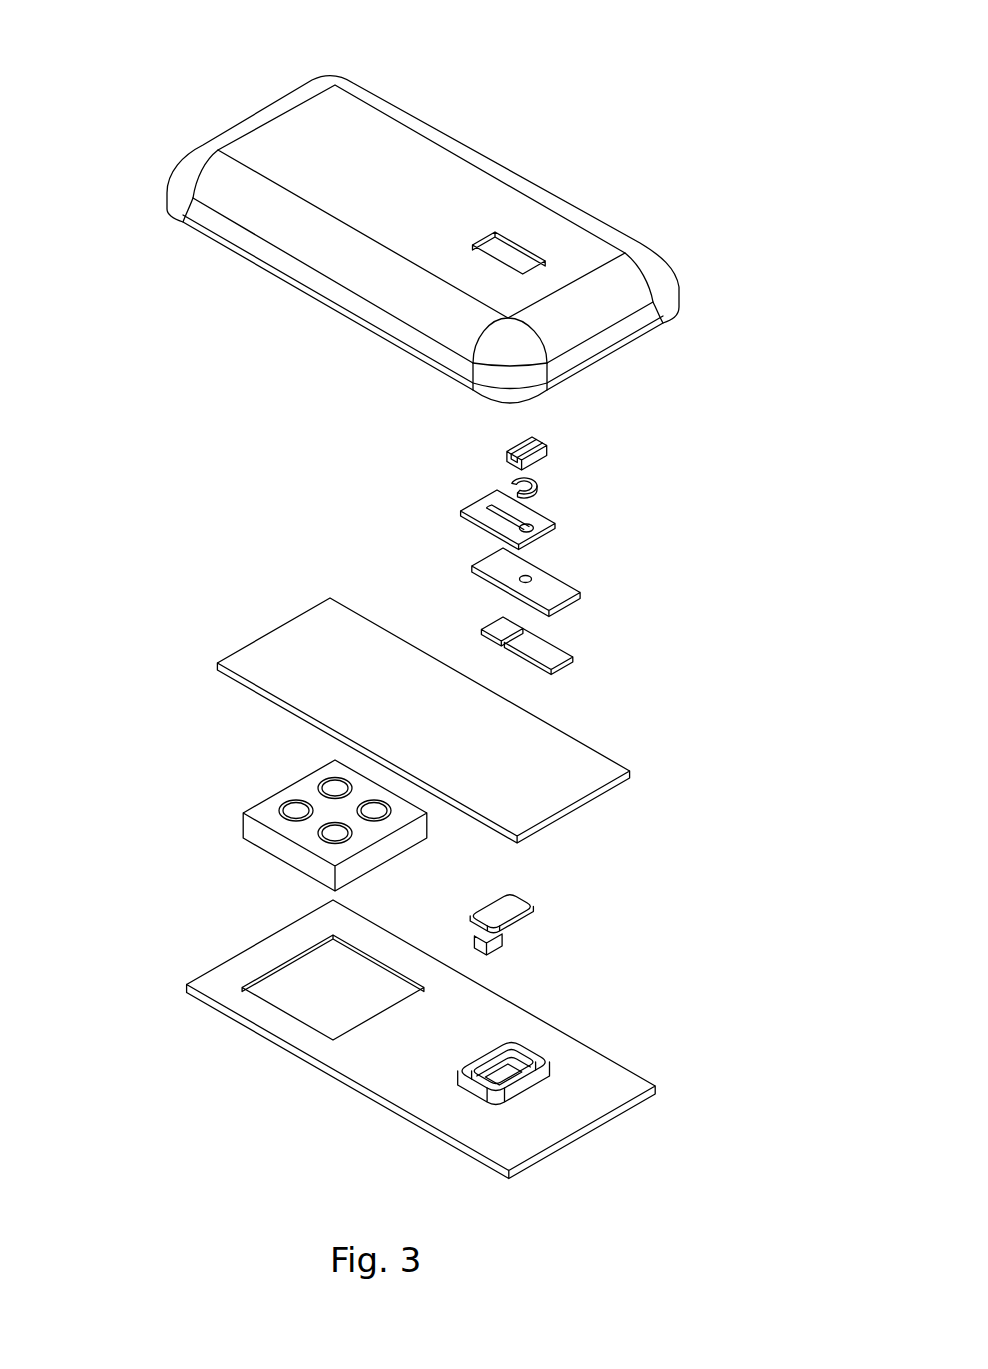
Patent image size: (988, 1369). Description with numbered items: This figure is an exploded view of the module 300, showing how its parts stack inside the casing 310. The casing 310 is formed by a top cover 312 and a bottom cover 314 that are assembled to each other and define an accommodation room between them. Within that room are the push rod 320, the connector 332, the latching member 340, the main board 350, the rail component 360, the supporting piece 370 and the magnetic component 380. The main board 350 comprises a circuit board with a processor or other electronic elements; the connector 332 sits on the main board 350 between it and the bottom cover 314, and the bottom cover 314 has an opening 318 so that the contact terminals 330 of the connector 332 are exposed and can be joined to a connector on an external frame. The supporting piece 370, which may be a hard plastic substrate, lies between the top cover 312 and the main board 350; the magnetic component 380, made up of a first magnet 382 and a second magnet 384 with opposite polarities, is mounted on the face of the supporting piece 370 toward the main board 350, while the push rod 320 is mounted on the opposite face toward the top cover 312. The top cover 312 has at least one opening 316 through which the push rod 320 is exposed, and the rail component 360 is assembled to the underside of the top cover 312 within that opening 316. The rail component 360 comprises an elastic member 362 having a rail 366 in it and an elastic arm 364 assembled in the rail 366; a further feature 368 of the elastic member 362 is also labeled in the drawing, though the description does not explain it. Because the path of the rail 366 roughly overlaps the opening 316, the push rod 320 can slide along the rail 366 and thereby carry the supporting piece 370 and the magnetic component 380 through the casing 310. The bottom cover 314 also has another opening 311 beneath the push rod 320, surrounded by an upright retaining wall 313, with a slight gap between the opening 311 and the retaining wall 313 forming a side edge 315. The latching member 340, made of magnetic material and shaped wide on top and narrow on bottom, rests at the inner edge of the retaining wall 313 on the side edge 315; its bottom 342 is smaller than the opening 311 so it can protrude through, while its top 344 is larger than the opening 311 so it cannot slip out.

The module 300 is at (124, 69).
The casing 310 is at (97, 265).
The top cover 312 is at (303, 278).
The bottom cover 314 is at (257, 957).
The opening 316 is at (517, 242).
The opening 318 is at (298, 1001).
The opening 311 is at (525, 1054).
The retaining wall 313 is at (565, 1078).
The side edge 315 is at (507, 1062).
The push rod 320 is at (545, 445).
The contact terminals 330 is at (313, 810).
The connector 332 is at (300, 787).
The latching member 340 is at (546, 912).
The bottom 342 is at (513, 933).
The top 344 is at (514, 901).
The main board 350 is at (545, 730).
The rail component 360 is at (657, 468).
The elastic member 362 is at (513, 506).
The elastic arm 364 is at (538, 484).
The rail 366 is at (487, 508).
The hole 368 is at (487, 522).
The supporting piece 370 is at (568, 588).
The magnetic component 380 is at (657, 620).
The first magnet 382 is at (505, 623).
The second magnet 384 is at (550, 655).